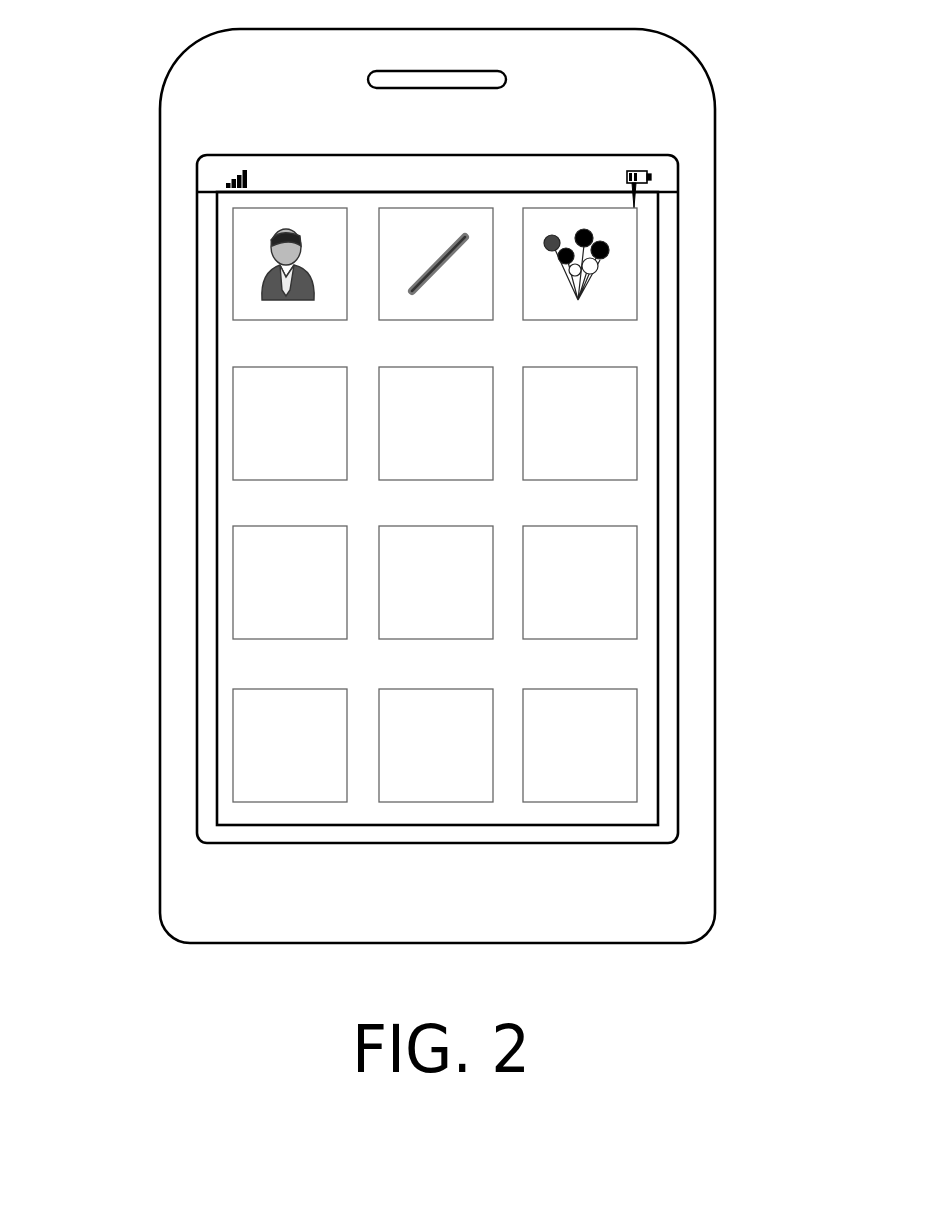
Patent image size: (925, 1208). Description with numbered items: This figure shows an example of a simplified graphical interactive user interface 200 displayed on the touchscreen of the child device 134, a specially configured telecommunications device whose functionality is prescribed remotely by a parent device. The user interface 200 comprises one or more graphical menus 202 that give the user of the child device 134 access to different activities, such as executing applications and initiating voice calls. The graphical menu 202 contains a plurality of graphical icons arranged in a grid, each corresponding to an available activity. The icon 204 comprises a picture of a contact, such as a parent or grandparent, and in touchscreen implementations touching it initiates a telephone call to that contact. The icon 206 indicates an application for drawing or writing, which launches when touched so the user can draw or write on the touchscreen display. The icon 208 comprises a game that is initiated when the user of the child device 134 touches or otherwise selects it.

The child device 134 is at (178, 66).
The graphical interactive user interface 200 is at (130, 842).
The graphical menu 202 is at (510, 505).
The icon 204 is at (285, 320).
The icon 206 is at (437, 320).
The icon 208 is at (637, 263).